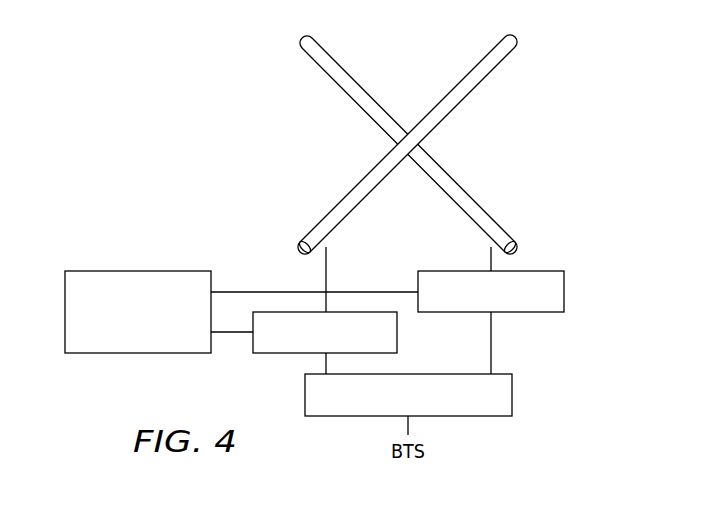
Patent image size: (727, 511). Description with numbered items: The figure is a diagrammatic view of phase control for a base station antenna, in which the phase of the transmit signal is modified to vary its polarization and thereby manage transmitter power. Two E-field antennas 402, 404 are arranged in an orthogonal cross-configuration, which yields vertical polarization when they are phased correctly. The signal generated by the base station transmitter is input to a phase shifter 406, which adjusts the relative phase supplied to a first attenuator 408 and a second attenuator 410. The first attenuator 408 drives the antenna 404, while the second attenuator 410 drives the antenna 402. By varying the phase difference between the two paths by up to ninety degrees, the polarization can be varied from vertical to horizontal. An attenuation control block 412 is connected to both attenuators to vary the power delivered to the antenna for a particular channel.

The E-field antenna 402 is at (470, 70).
The E-field antenna 404 is at (368, 92).
The phase shifter 406 is at (512, 392).
The first attenuator 408 is at (533, 312).
The second attenuator 410 is at (282, 355).
The attenuation control block 412 is at (140, 355).